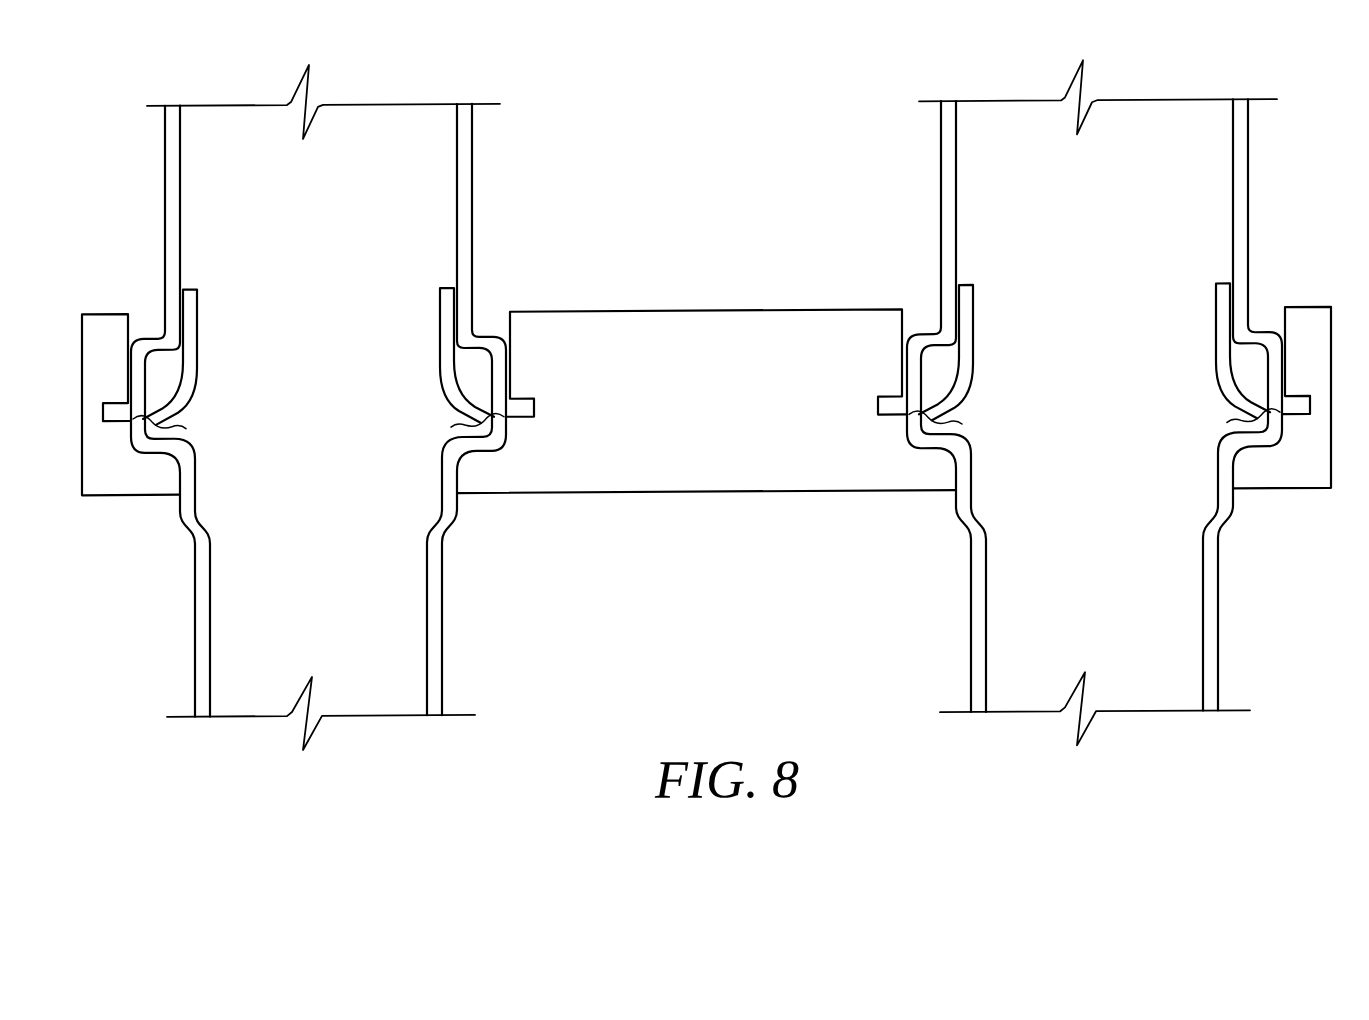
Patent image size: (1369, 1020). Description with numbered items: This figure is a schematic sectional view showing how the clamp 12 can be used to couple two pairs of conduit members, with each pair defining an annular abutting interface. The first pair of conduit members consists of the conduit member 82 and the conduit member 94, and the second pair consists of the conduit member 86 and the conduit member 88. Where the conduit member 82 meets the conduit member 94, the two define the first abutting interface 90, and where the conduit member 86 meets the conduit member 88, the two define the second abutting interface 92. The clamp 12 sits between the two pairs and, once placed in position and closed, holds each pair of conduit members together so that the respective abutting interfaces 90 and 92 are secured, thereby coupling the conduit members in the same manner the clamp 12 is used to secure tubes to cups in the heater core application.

The clamp 12 is at (700, 494).
The conduit member 82 is at (165, 188).
The conduit member 86 is at (1248, 184).
The conduit member 88 is at (1217, 609).
The abutting interface 90 is at (140, 418).
The abutting interface 92 is at (1265, 416).
The conduit member 94 is at (195, 607).